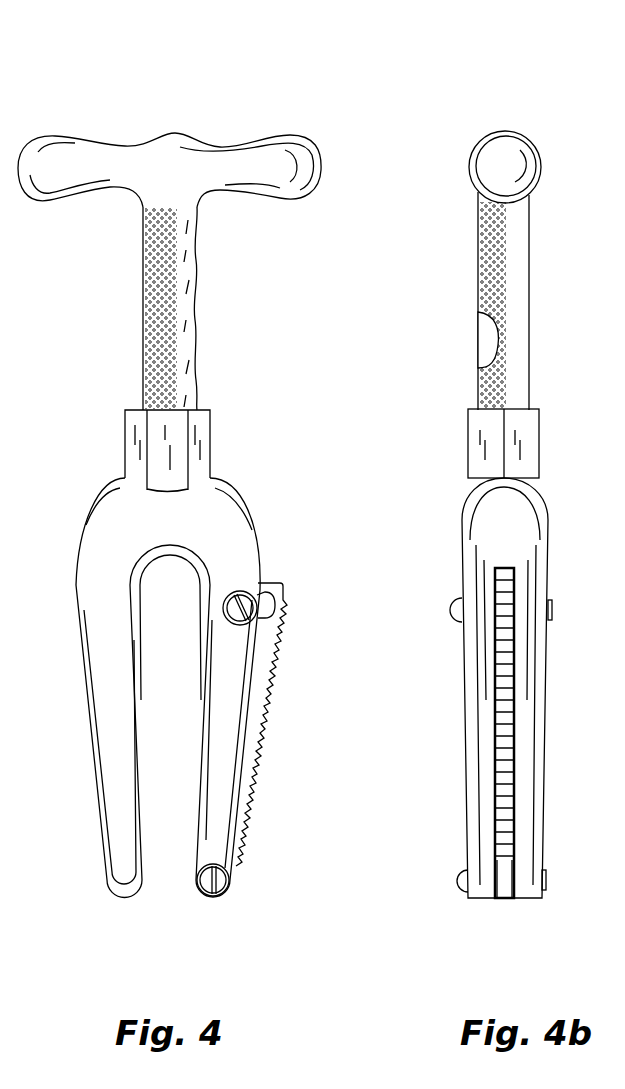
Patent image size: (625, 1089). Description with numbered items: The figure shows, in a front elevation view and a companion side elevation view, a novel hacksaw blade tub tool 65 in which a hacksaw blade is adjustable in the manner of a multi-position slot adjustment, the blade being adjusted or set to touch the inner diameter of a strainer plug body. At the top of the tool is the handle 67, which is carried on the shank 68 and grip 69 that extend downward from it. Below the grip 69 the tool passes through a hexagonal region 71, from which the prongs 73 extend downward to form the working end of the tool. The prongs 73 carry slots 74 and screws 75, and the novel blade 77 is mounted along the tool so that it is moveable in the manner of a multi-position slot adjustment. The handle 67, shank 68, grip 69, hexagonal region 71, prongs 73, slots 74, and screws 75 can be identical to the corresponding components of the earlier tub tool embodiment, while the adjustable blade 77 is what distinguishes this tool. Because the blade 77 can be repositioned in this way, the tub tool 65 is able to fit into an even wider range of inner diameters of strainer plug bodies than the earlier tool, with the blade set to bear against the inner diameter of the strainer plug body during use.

In FIG. 4, the tub tool 65 is at (186, 90).
In FIG. 4, the handle 67 is at (300, 138).
In FIG. 4B, the handle 67 is at (470, 170).
In FIG. 4B, the shank 68 is at (478, 338).
In FIG. 4, the grip 69 is at (197, 305).
In FIG. 4B, the grip 69 is at (478, 272).
In FIG. 4, the hexagonal region 71 is at (210, 440).
In FIG. 4B, the hexagonal region 71 is at (468, 437).
In FIG. 4, the prongs 73 is at (92, 742).
In FIG. 4B, the prongs 73 is at (468, 752).
In FIG. 4B, the slots 74 is at (505, 568).
In FIG. 4, the screws 75 is at (270, 605).
In FIG. 4B, the screws 75 is at (455, 622).
In FIG. 4, the blade 77 is at (262, 725).
In FIG. 4B, the blade 77 is at (505, 900).